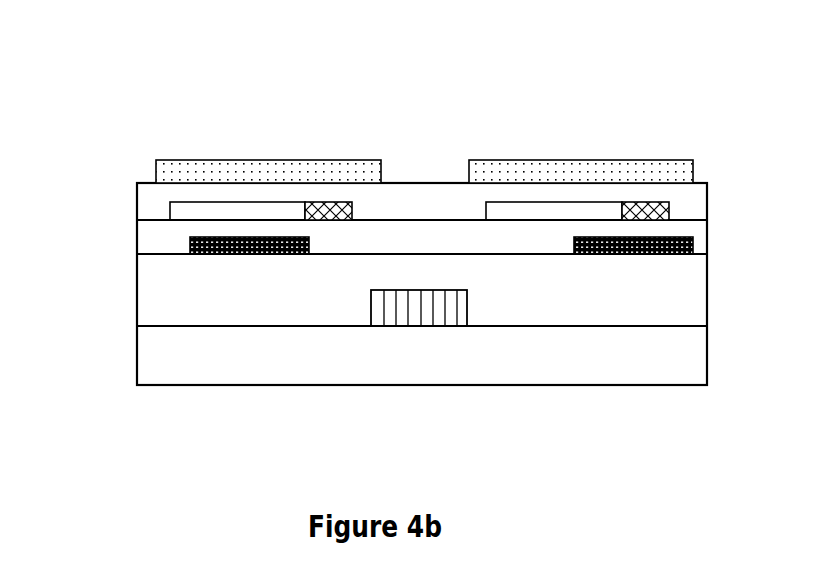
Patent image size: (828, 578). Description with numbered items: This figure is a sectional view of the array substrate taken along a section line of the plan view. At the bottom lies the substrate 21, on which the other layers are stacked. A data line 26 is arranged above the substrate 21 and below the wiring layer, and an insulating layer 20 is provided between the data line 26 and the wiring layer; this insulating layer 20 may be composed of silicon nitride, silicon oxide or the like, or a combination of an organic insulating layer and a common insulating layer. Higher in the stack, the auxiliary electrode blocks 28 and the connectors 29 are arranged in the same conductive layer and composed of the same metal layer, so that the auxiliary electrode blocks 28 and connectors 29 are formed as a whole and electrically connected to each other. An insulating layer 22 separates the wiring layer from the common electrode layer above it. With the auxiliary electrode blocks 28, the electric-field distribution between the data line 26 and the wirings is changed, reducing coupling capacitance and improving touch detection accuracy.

The insulating layer 20 is at (617, 266).
The substrate 21 is at (421, 355).
The insulating layer 22 is at (147, 193).
The data line 26 is at (425, 304).
The auxiliary electrode block 28 is at (590, 215).
The connector 29 is at (662, 212).